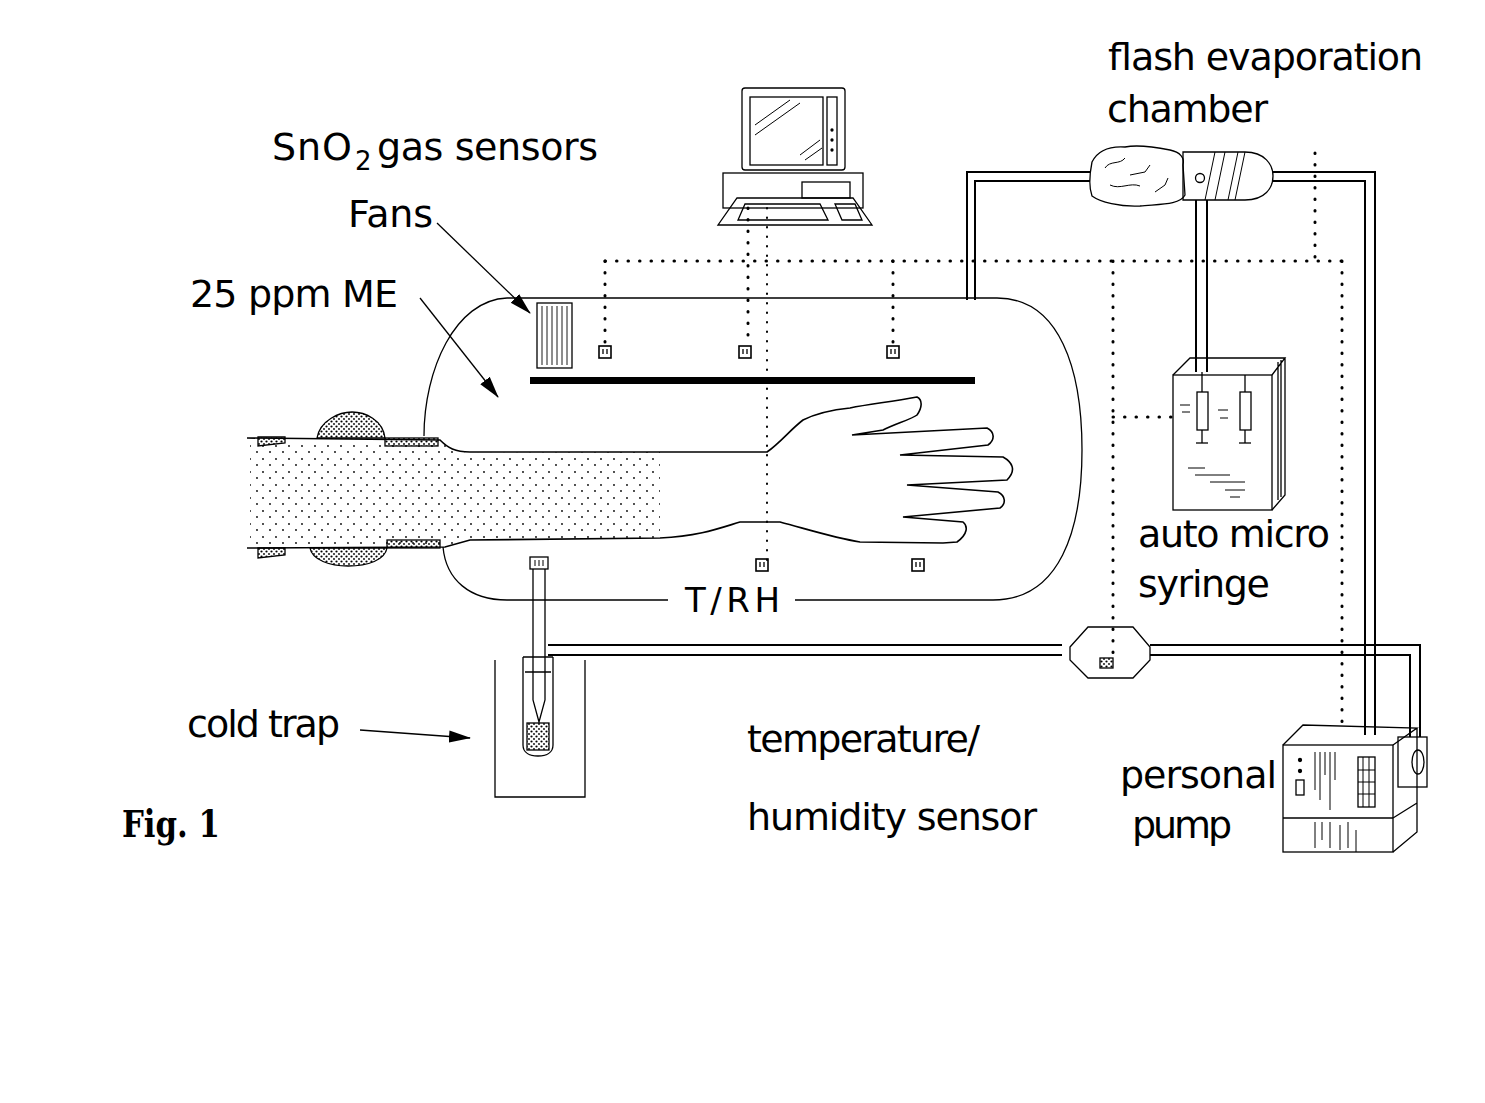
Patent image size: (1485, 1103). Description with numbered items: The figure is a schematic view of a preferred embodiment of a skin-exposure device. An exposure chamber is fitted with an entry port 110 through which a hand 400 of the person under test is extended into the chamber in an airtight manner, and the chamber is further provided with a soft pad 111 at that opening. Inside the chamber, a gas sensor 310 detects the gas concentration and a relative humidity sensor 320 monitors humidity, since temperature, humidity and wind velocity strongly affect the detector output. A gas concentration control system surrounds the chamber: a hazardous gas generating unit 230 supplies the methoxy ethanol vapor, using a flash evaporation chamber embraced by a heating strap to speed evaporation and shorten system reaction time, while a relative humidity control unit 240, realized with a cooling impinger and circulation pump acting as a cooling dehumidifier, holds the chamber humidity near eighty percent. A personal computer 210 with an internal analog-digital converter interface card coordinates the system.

The entry port 110 is at (443, 550).
The soft pad 111 is at (392, 552).
The personal computer 210 is at (845, 118).
The hazardous gas generating unit 230 is at (1237, 153).
The relative humidity control unit 240 is at (577, 798).
The gas sensor 310 is at (731, 332).
The relative humidity sensor 320 is at (787, 622).
The hand 400 is at (248, 507).